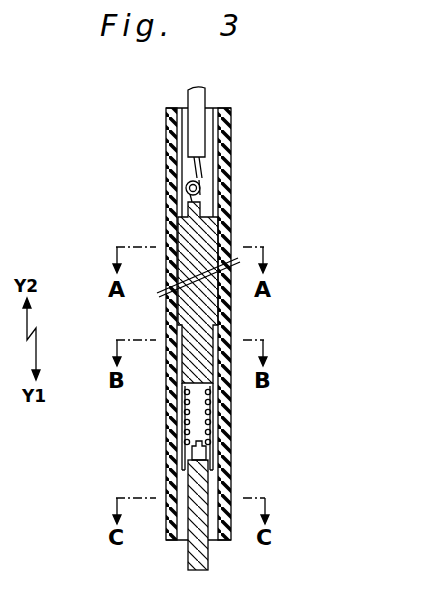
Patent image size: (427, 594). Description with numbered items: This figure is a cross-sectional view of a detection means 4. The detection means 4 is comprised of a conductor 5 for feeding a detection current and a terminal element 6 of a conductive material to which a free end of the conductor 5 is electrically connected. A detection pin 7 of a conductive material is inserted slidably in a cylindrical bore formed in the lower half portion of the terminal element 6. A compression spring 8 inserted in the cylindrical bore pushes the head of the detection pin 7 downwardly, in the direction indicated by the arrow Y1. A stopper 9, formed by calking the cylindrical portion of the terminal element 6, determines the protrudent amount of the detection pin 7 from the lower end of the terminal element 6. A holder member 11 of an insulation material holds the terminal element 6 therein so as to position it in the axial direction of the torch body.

The detection means 4 is at (332, 193).
The conductor 5 is at (199, 145).
The terminal element 6 is at (216, 222).
The detection pin 7 is at (193, 478).
The compression spring 8 is at (209, 397).
The stopper 9 is at (204, 440).
The holder member 11 is at (226, 298).